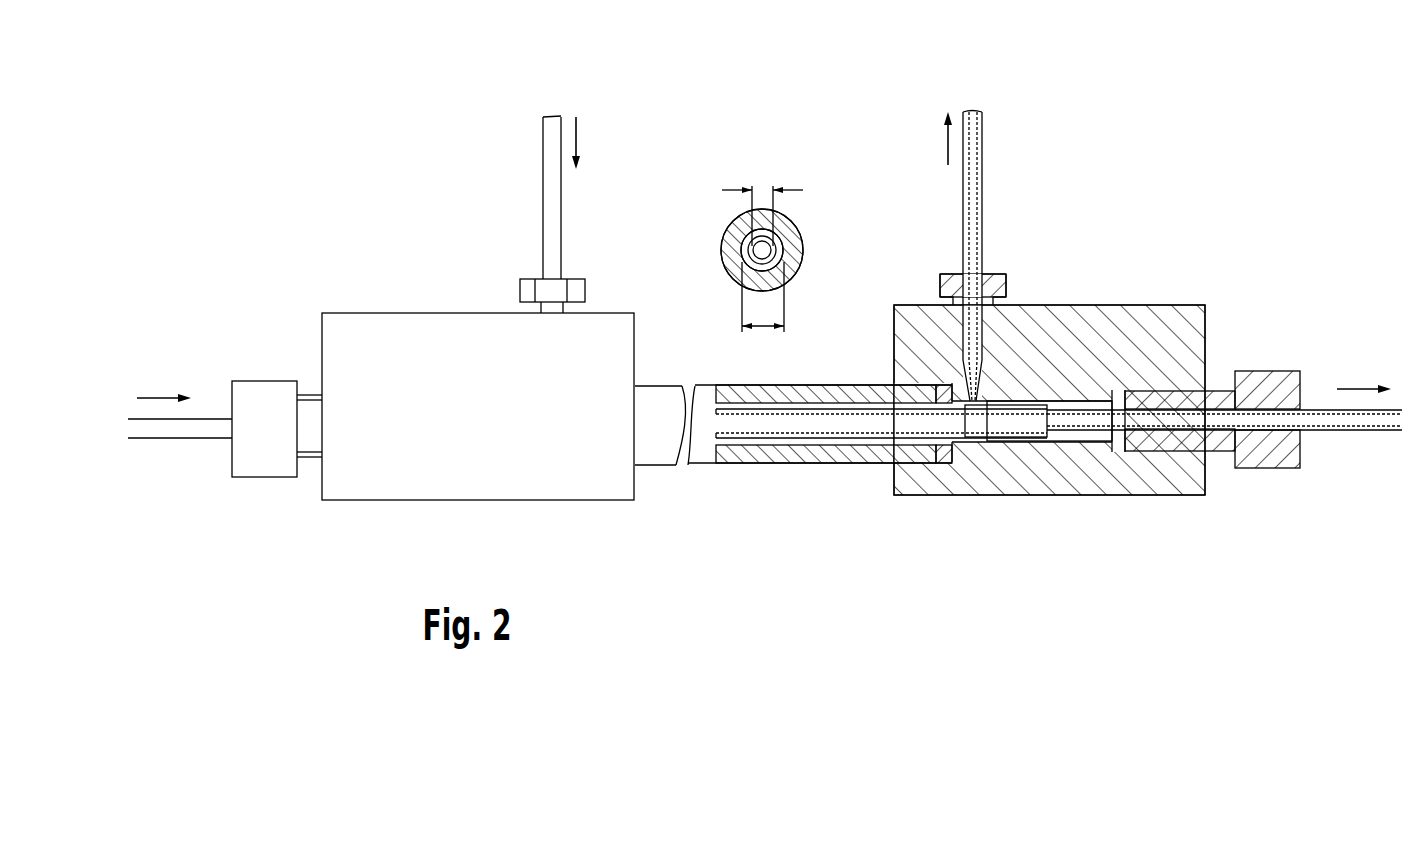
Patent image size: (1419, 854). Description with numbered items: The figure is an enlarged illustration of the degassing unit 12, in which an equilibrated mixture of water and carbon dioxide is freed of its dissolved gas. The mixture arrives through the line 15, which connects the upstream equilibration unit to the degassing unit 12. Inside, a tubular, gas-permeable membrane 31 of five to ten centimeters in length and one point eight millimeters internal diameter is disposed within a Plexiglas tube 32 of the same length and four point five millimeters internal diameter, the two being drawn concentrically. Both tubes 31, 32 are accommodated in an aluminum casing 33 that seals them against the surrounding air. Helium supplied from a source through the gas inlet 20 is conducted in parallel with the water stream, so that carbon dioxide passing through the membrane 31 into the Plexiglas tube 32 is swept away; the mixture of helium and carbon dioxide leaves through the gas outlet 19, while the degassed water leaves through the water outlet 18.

The degassing unit 12 is at (708, 128).
The line 15 is at (178, 438).
The water outlet 18 is at (1366, 432).
The gas outlet 19 is at (972, 137).
The gas inlet 20 is at (548, 142).
The tubular gas-permeable membrane 31 is at (868, 422).
The Plexiglas tube 32 is at (794, 452).
The aluminum casing 33 is at (352, 326).